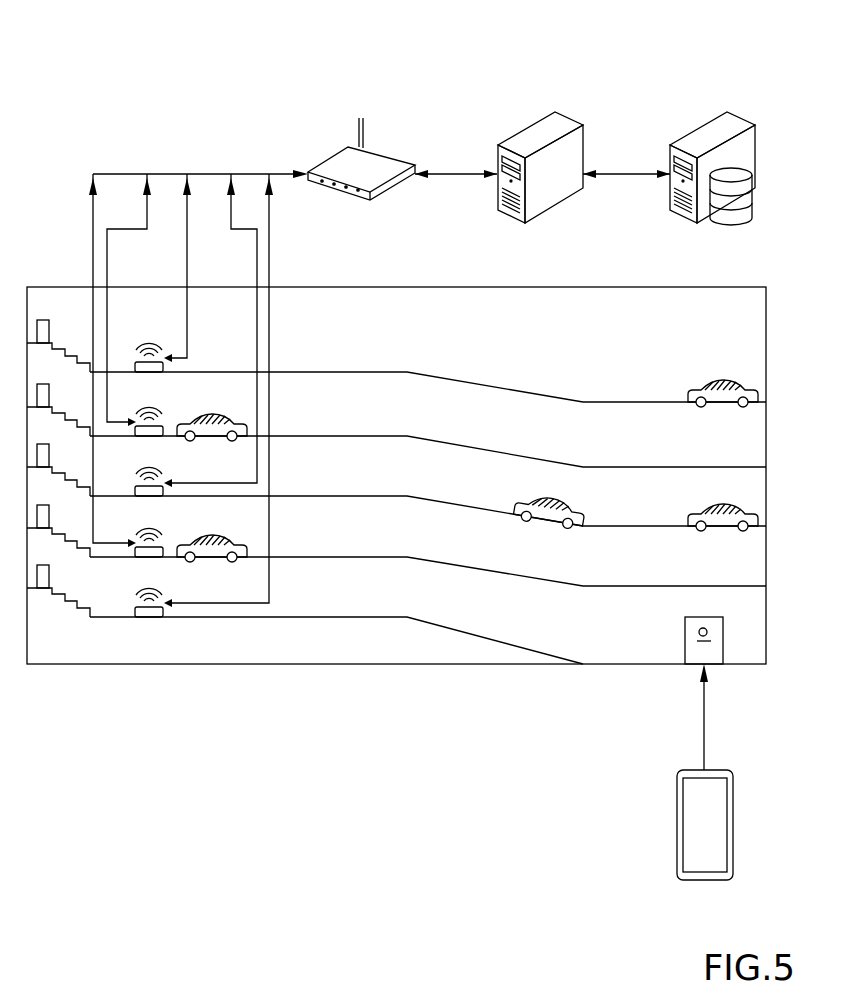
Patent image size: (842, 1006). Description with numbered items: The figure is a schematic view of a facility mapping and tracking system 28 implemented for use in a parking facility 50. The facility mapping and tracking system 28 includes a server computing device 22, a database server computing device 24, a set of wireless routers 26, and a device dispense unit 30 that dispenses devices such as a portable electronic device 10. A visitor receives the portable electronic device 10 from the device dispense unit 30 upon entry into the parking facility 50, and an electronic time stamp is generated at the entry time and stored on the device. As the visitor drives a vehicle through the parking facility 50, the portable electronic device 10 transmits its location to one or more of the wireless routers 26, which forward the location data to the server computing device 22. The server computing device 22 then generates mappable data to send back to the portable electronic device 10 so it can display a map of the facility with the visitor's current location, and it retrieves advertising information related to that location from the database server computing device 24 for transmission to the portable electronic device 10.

The facility mapping and tracking system 28 is at (137, 46).
The wireless routers 26 is at (378, 158).
The server computing device 22 is at (568, 120).
The database server computing device 24 is at (740, 120).
The parking facility 50 is at (756, 313).
The device dispense unit 30 is at (685, 643).
The portable electronic device 10 is at (678, 802).